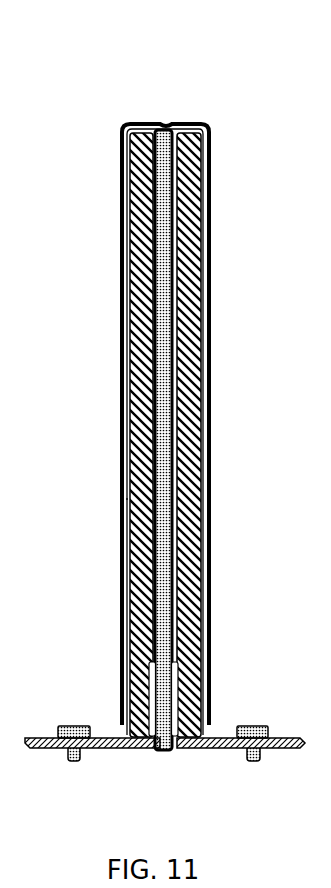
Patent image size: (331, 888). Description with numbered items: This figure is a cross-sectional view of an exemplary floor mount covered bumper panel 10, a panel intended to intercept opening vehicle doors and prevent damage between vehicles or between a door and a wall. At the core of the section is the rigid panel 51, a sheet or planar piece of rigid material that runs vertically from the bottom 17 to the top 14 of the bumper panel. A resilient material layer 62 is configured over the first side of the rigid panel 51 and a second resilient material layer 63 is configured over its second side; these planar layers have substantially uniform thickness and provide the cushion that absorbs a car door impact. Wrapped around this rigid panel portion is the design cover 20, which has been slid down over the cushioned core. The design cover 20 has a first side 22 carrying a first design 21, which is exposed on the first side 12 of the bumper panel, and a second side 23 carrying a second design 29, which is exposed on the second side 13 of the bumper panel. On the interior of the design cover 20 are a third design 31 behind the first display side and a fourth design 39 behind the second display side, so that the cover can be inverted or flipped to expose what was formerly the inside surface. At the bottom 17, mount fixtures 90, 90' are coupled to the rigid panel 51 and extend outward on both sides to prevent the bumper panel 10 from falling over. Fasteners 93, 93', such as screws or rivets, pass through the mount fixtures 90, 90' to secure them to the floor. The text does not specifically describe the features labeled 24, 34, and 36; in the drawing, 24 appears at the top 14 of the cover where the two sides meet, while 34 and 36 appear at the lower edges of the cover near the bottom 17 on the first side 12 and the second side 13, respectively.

The bumper panel 10 is at (147, 80).
The first side of the bumper panel 12 is at (120, 515).
The second side of the bumper panel 13 is at (210, 477).
The top 14 is at (196, 122).
The bottom 17 is at (116, 735).
The design cover 20 is at (120, 168).
The first design 21 is at (125, 330).
The first side of the design cover 22 is at (125, 375).
The second side of the design cover 23 is at (210, 400).
The cap seam 24 is at (138, 124).
The second design 29 is at (210, 343).
The third design 31 is at (128, 310).
The lower housing edge 34 is at (120, 727).
The lower housing edge 36 is at (208, 725).
The fourth design 39 is at (205, 315).
The rigid panel 51 is at (172, 750).
The resilient material layer 62 is at (133, 226).
The second resilient material layer 63 is at (186, 218).
The mount fixture 90 is at (92, 776).
The mount fixture 90' is at (241, 776).
The fastener 93 is at (61, 770).
The fastener 93' is at (262, 770).